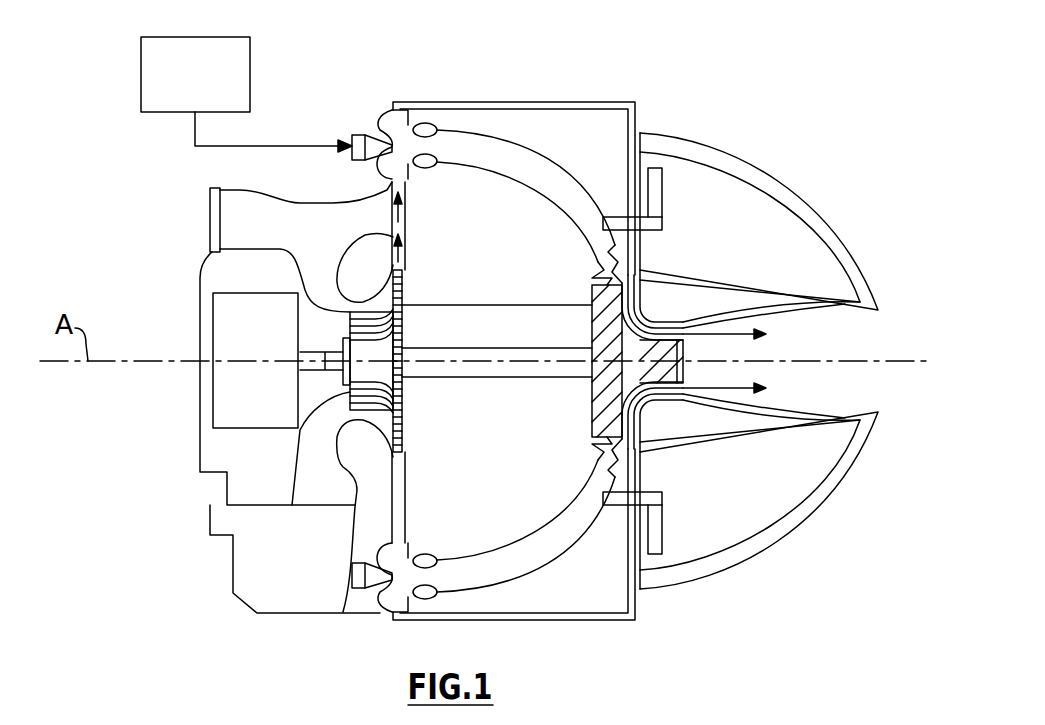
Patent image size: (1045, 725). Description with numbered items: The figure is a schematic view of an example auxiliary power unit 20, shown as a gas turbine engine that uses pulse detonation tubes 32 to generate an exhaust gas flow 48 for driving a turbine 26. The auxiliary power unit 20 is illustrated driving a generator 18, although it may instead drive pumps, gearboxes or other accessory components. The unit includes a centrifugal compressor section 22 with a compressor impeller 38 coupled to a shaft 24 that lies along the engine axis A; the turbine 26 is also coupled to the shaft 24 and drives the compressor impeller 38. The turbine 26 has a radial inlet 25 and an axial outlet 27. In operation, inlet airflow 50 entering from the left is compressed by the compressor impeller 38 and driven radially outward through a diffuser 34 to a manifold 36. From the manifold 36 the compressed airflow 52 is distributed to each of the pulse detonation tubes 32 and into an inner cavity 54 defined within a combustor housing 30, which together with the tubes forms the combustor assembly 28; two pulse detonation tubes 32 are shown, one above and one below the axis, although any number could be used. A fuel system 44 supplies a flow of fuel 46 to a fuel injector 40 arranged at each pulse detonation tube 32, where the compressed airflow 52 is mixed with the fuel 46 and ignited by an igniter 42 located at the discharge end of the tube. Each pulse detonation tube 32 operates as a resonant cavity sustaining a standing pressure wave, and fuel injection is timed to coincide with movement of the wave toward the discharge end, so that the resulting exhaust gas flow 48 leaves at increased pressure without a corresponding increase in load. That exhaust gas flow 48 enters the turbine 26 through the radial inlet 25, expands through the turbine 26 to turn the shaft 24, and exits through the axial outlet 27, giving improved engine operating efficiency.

The generator 18 is at (228, 333).
The auxiliary power unit 20 is at (118, 118).
The centrifugal compressor section 22 is at (320, 427).
The shaft 24 is at (505, 363).
The radial inlet 25 is at (593, 293).
The turbine 26 is at (612, 383).
The axial outlet 27 is at (715, 388).
The combustor assembly 28 is at (683, 50).
The combustor housing 30 is at (635, 106).
The pulse detonation tubes 32 is at (513, 142).
The diffuser 34 is at (405, 228).
The manifold 36 is at (385, 118).
The compressor impeller 38 is at (374, 380).
The fuel injector 40 is at (360, 158).
The igniter 42 is at (660, 218).
The fuel system 44 is at (240, 37).
The fuel 46 is at (312, 146).
The exhaust gas flow 48 is at (742, 322).
The inlet airflow 50 is at (344, 314).
The compressed airflow 52 is at (403, 198).
The inner cavity 54 is at (596, 150).